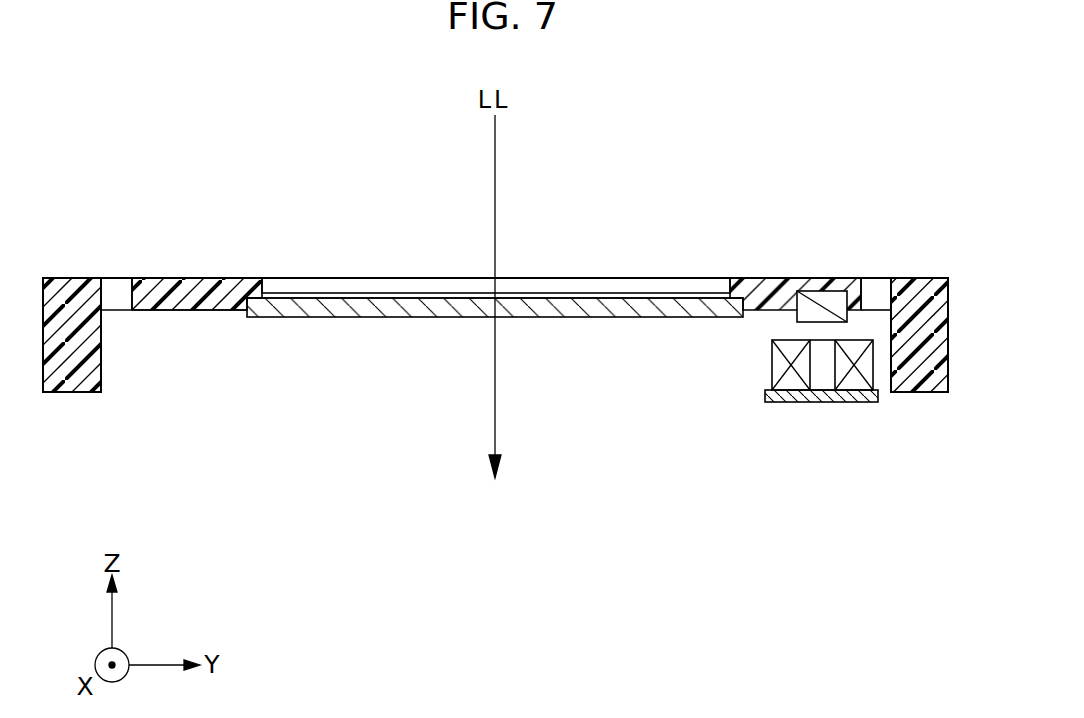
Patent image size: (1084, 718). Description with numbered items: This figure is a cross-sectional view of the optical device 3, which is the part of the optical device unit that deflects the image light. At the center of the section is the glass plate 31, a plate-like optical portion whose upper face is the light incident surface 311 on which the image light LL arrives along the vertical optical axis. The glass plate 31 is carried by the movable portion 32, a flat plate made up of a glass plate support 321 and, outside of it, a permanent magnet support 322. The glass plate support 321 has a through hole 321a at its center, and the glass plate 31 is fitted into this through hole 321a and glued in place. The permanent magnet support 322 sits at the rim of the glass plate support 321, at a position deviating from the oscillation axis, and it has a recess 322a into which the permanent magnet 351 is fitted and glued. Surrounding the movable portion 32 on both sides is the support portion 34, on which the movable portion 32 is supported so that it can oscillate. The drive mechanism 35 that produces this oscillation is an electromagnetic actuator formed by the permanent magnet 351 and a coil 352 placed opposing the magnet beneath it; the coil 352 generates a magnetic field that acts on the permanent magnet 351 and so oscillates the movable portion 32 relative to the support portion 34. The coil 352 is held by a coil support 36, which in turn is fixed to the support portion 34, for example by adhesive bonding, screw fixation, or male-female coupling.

The optical device 3 is at (129, 228).
The glass plate 31 is at (632, 308).
The light incident surface 311 is at (563, 298).
The movable portion 32 is at (200, 284).
The glass plate support 321 is at (418, 279).
The through hole 321a is at (306, 285).
The permanent magnet support 322 is at (783, 290).
The recess 322a is at (870, 278).
The support portion 34 is at (75, 368).
The drive mechanism 35 is at (893, 257).
The permanent magnet 351 is at (820, 302).
The coil 352 is at (779, 368).
The coil support 36 is at (818, 396).